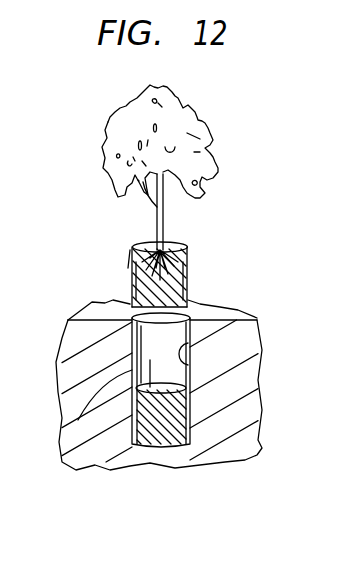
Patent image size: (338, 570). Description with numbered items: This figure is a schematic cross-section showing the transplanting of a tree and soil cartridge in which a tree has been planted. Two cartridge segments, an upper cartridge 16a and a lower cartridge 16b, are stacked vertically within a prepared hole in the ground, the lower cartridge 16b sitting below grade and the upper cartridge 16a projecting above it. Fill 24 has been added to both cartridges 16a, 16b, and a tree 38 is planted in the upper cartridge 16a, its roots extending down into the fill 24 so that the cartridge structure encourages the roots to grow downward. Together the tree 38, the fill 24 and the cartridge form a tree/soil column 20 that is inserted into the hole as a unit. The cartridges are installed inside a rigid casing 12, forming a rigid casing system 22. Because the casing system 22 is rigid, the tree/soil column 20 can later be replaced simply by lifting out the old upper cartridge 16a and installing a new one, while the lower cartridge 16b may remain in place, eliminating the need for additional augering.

The rigid casing 12 is at (192, 362).
The cartridge 16a is at (132, 272).
The cartridge 16b is at (175, 446).
The tree/soil column 20 is at (189, 259).
The rigid casing system 22 is at (68, 428).
The fill 24 is at (172, 288).
The tree 38 is at (108, 122).